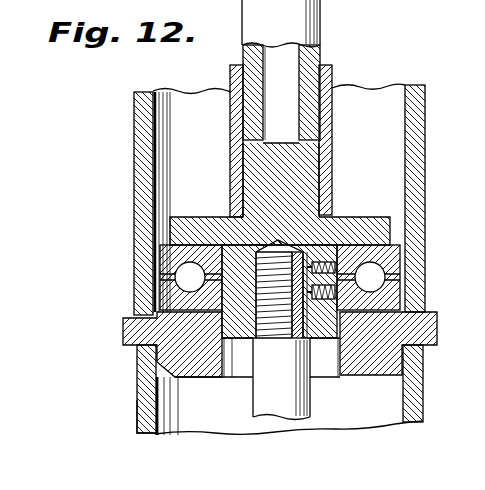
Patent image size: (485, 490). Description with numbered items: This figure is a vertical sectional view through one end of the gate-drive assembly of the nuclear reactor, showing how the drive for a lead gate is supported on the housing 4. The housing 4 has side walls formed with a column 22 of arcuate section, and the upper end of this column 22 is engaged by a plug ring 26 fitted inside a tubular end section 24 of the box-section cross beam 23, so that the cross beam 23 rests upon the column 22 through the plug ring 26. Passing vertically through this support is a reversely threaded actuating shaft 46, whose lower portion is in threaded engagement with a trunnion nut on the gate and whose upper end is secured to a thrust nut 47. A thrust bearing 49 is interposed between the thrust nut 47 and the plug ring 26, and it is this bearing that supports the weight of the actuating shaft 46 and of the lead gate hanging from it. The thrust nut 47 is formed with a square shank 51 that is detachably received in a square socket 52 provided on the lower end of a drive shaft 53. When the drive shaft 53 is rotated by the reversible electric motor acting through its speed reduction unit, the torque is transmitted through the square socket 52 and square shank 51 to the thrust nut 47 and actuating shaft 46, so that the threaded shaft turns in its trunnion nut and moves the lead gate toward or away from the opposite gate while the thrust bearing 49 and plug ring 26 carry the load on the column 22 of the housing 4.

The housing 4 is at (137, 422).
The column 22 is at (140, 388).
The cross beam 23 is at (137, 104).
The tubular end section 24 is at (137, 140).
The plug ring 26 is at (134, 330).
The actuating shaft 46 is at (295, 404).
The thrust nut 47 is at (337, 222).
The thrust bearing 49 is at (372, 277).
The square shank 51 is at (302, 183).
The square socket 52 is at (333, 153).
The drive shaft 53 is at (320, 25).